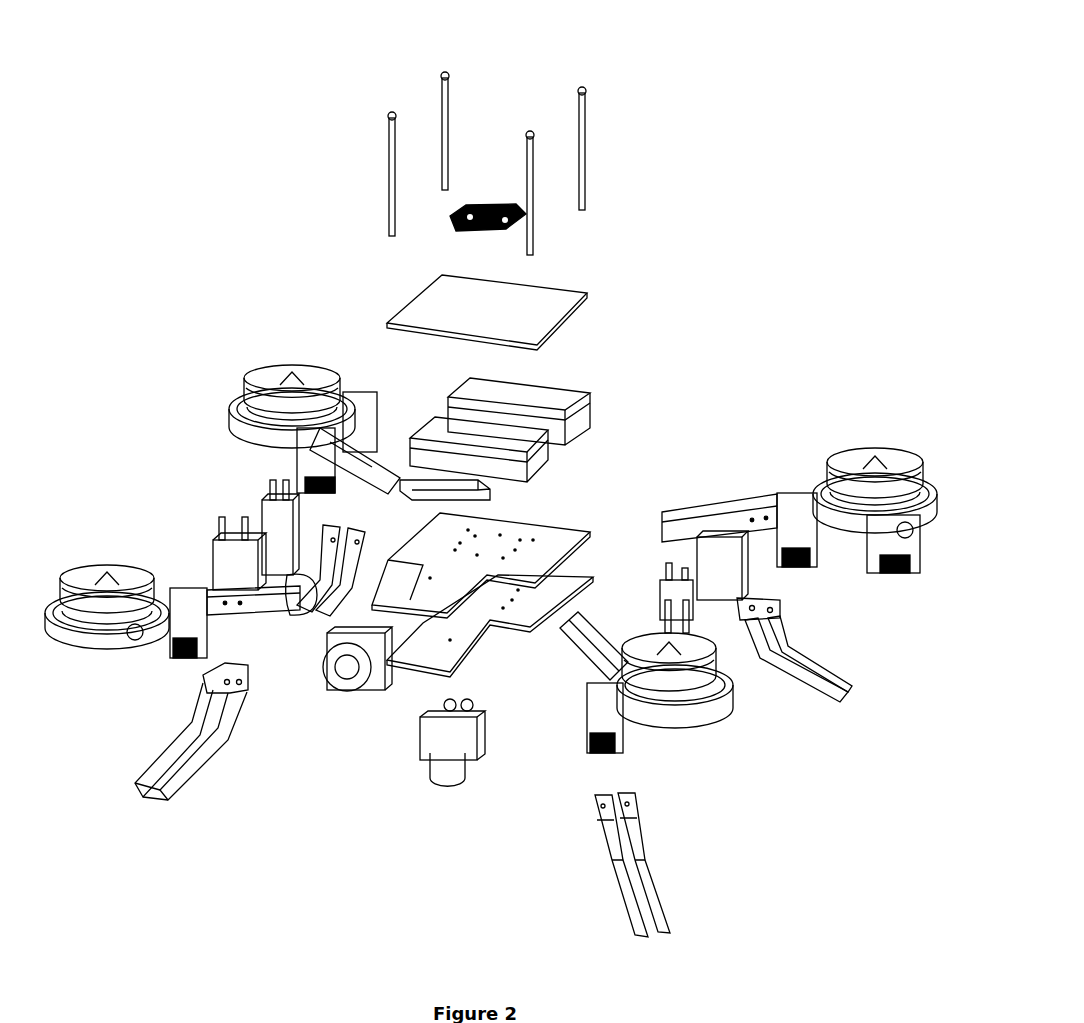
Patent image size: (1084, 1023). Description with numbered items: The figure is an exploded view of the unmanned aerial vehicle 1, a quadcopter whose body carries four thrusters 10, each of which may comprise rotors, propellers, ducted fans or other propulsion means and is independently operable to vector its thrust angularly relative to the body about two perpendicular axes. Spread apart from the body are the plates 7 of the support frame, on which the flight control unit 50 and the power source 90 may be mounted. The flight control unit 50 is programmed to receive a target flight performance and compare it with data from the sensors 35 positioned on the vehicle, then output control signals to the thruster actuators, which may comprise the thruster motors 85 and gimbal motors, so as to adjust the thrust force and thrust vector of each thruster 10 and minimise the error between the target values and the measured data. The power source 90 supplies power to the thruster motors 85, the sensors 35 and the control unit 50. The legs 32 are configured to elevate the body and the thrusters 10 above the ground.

The unmanned aerial vehicle 1 is at (698, 86).
The flight control unit 50 is at (455, 222).
The plate 7 is at (537, 292).
The power source 90 is at (555, 400).
The thruster 10 is at (275, 375).
The thruster motor 85 is at (260, 503).
The leg 32 is at (305, 610).
The sensor 35 is at (333, 673).